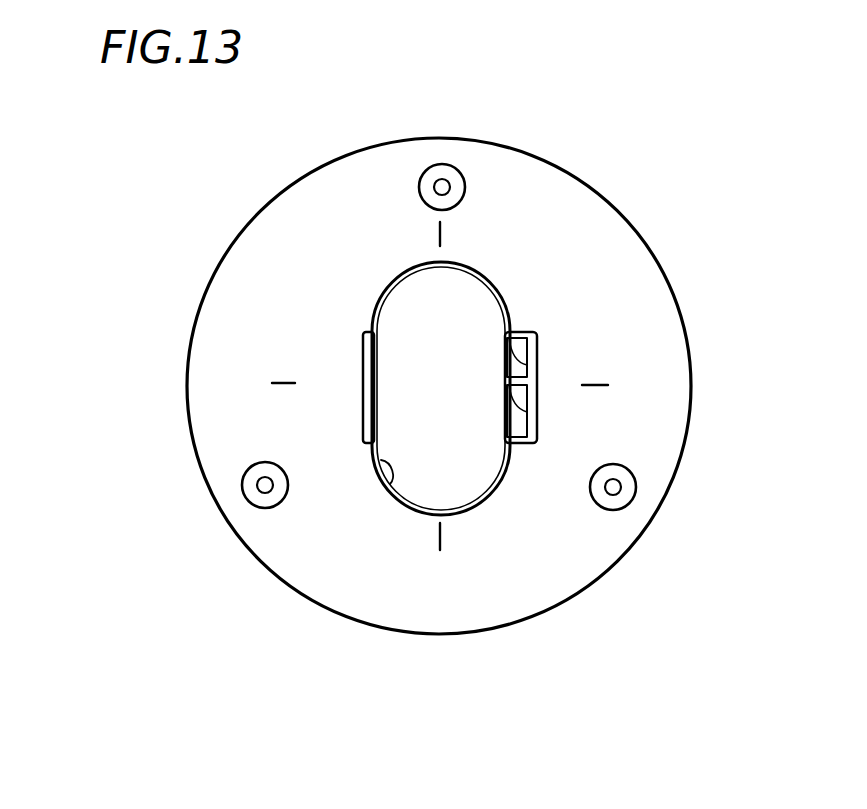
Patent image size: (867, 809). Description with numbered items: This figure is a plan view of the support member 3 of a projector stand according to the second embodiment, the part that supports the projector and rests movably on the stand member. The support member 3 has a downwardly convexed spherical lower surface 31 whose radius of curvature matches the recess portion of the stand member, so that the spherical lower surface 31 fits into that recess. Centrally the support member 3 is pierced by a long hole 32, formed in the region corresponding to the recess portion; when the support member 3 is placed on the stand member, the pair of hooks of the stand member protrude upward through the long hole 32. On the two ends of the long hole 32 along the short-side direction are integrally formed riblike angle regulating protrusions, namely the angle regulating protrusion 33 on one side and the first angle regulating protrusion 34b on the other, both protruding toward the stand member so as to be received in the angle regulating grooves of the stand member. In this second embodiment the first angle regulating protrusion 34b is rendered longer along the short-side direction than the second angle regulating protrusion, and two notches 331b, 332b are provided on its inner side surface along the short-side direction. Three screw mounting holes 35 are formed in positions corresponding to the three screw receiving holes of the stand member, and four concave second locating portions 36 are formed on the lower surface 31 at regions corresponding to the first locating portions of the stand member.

The support member 3 is at (473, 548).
The spherical lower surface 31 is at (372, 283).
The long hole 32 is at (395, 498).
The angle regulating protrusion 33 is at (364, 386).
The first angle regulating protrusion 34b is at (524, 446).
The notch 331b is at (504, 388).
The notch 332b is at (506, 334).
The screw mounting hole 35 is at (428, 183).
The second locating portion 36 is at (441, 228).